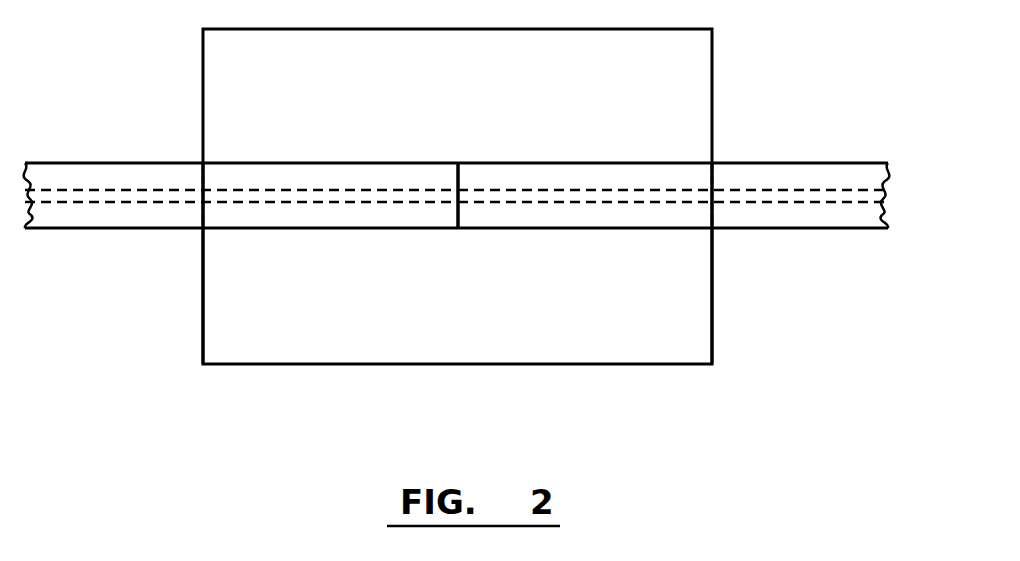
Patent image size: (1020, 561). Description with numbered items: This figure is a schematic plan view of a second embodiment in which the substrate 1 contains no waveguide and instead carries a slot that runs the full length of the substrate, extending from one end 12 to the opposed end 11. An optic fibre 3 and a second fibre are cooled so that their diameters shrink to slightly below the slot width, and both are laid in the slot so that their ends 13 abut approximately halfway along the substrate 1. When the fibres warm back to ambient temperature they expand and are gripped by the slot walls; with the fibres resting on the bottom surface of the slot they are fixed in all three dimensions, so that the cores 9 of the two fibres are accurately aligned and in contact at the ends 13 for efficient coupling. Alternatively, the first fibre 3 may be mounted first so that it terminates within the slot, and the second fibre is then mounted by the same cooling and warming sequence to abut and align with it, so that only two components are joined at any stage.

The housing / splice block 1 is at (336, 311).
The first fibre 3 is at (800, 163).
The optical fiber 9 is at (582, 190).
The fibre ends 13 is at (458, 174).
The end of the substrate 12 is at (203, 310).
The right side wall of housing 11 is at (712, 307).